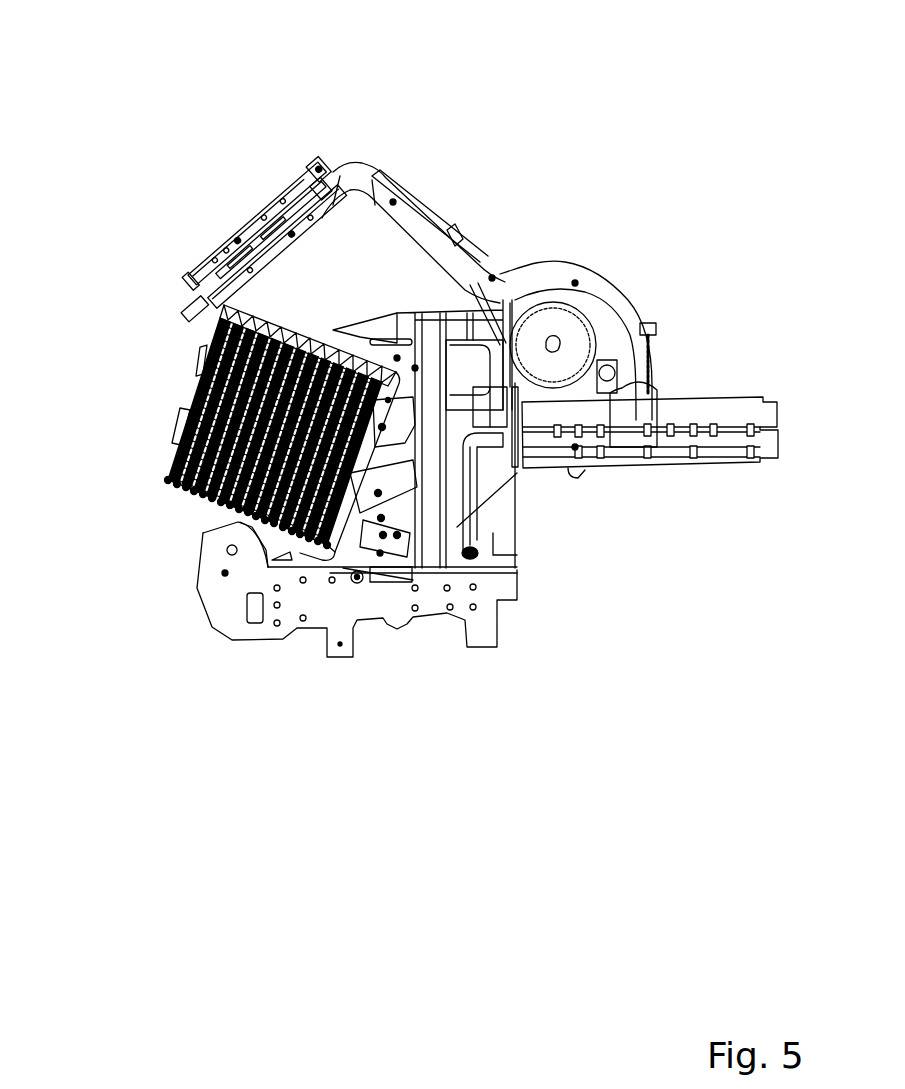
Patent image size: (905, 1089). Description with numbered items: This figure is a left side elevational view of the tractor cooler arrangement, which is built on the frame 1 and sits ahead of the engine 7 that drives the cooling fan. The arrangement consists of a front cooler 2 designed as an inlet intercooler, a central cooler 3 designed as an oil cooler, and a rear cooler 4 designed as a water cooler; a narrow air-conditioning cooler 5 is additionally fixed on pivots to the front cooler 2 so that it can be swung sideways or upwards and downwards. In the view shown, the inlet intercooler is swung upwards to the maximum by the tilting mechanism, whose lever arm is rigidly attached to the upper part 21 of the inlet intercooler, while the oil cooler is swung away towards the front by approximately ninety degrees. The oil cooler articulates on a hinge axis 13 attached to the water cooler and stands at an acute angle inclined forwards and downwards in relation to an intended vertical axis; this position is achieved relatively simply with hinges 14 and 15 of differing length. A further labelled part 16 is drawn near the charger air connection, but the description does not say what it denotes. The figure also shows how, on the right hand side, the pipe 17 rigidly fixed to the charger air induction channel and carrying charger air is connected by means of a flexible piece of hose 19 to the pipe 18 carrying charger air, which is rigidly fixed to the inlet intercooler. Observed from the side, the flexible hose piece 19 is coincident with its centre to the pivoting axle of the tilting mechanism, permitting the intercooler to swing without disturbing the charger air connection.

The frame 1 is at (283, 673).
The front cooler 2 is at (236, 177).
The central cooler 3 is at (272, 563).
The rear cooler 4 is at (417, 297).
The air-conditioning cooler 5 is at (181, 161).
The engine 7 is at (645, 596).
The hinge axis 13 is at (365, 692).
The hinge 14 is at (318, 609).
The hinge 15 is at (506, 601).
The screw 16 is at (708, 209).
The pipe 17 is at (589, 223).
The pipe 18 is at (414, 185).
The flexible piece of hose 19 is at (476, 153).
The upper part 21 is at (270, 113).